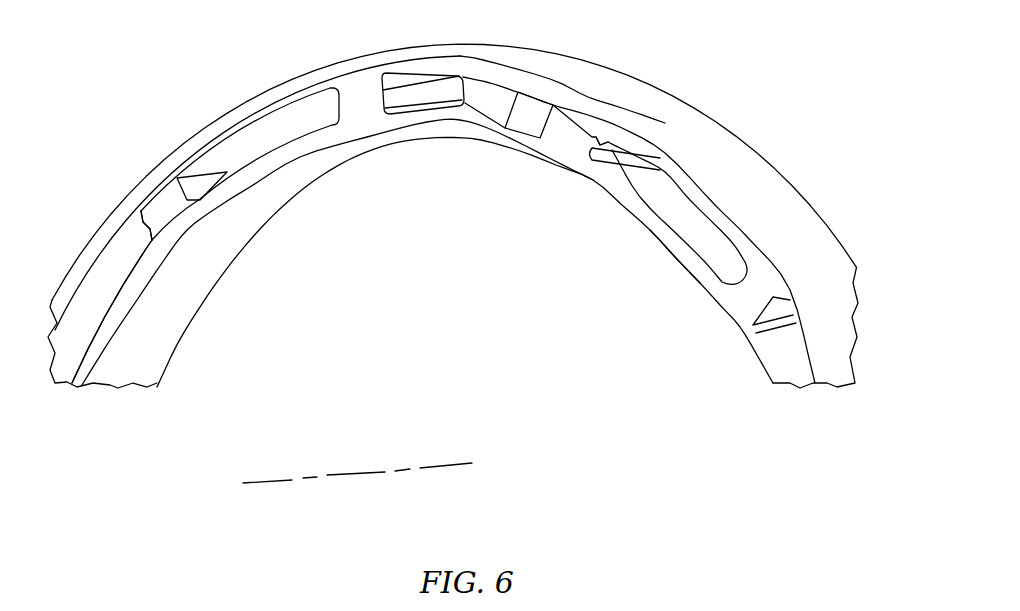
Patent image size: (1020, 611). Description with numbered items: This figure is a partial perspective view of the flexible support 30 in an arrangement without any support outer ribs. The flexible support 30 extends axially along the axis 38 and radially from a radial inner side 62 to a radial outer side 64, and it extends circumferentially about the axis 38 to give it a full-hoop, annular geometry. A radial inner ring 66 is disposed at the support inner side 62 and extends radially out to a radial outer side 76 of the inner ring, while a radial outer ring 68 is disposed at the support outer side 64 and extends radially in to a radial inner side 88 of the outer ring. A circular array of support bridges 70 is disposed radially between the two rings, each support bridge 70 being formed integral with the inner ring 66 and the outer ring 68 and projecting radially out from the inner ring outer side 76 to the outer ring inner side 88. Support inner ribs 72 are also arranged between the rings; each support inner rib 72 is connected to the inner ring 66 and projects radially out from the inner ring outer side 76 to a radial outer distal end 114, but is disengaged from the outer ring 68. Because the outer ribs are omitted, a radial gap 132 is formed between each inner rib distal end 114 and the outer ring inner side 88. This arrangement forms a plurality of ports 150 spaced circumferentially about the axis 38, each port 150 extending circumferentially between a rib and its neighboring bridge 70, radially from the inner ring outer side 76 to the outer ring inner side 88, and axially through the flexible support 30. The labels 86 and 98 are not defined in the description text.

The flexible support 30 is at (772, 77).
The axis 38 is at (357, 478).
The radial inner side 62 is at (427, 254).
The inner ring portion 86 is at (708, 288).
The radial outer side 64 is at (466, 219).
The outer ring portion 98 is at (750, 238).
The radial inner ring 66 is at (688, 277).
The radial outer ring 68 is at (717, 205).
The support bridge 70 is at (392, 97).
The support inner rib 72 is at (200, 178).
The radial outer side of the support inner ring 76 is at (487, 110).
The radial inner side of the support outer ring 88 is at (518, 93).
The radial outer distal end 114 is at (146, 186).
The radial gap 132 is at (142, 196).
The port 150 is at (234, 139).